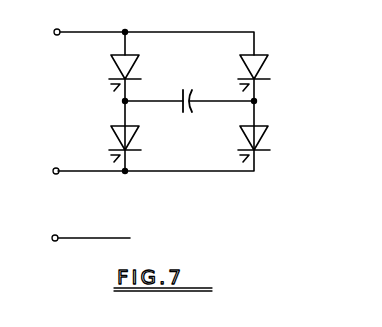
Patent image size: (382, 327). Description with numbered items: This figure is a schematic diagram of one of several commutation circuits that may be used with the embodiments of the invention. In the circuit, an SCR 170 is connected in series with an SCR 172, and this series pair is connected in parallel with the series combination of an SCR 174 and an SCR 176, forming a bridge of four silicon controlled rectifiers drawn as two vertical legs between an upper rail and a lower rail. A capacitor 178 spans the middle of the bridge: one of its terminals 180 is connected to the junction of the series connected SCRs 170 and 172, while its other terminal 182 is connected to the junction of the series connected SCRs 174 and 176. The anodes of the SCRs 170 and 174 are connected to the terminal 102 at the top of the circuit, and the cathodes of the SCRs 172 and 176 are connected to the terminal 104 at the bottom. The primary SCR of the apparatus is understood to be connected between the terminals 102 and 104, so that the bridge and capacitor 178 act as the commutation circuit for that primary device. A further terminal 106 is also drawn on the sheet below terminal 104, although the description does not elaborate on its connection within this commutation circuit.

The terminal 102 is at (54, 36).
The terminal 104 is at (53, 175).
The terminal 106 is at (52, 242).
The SCR 170 is at (114, 66).
The SCR 172 is at (112, 141).
The SCR 174 is at (263, 64).
The SCR 176 is at (262, 138).
The capacitor 178 is at (183, 98).
The terminal 180 is at (182, 113).
The terminal 182 is at (191, 113).